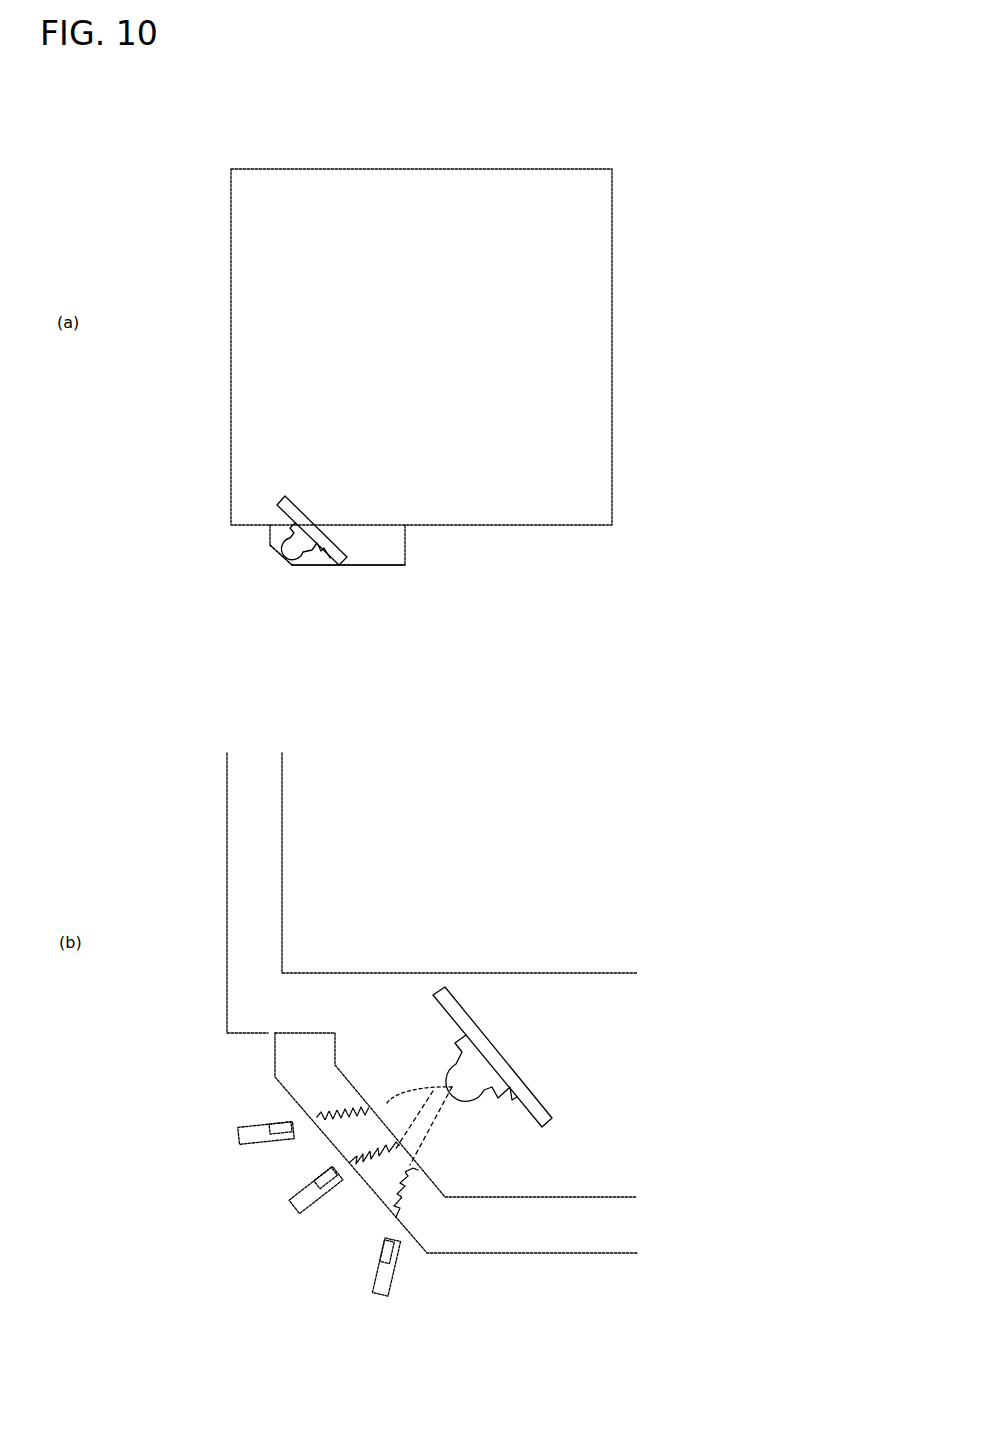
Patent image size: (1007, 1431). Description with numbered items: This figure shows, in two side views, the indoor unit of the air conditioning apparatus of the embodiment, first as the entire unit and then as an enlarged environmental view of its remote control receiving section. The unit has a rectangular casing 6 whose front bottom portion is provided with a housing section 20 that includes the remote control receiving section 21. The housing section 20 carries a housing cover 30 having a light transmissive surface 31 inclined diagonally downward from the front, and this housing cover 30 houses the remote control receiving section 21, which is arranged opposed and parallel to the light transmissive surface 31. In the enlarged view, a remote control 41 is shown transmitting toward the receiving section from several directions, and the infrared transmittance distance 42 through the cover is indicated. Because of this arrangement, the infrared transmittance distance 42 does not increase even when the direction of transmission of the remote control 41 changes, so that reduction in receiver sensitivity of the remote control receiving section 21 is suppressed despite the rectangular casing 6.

The rectangular casing 6 is at (424, 203).
The housing section 20 is at (393, 542).
The remote control receiving section 21 is at (335, 543).
The housing cover 30 is at (312, 567).
The light transmissive surface 31 is at (280, 563).
The remote control 41 is at (262, 1143).
The infrared transmittance distance 42 is at (317, 1117).